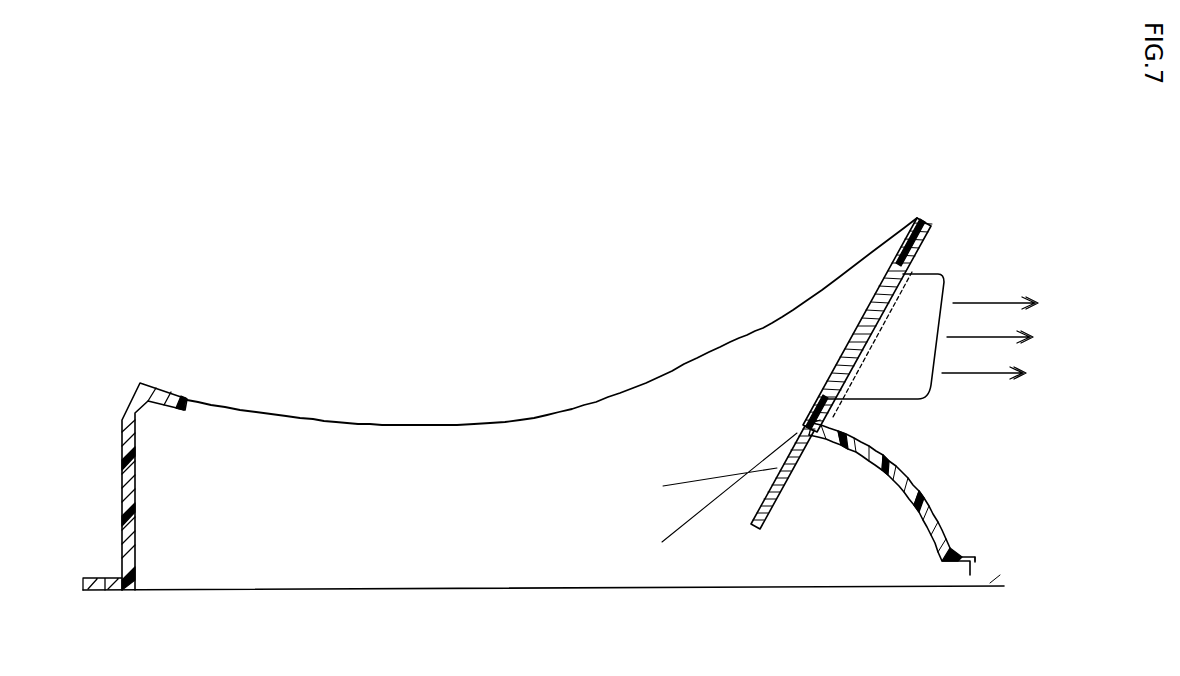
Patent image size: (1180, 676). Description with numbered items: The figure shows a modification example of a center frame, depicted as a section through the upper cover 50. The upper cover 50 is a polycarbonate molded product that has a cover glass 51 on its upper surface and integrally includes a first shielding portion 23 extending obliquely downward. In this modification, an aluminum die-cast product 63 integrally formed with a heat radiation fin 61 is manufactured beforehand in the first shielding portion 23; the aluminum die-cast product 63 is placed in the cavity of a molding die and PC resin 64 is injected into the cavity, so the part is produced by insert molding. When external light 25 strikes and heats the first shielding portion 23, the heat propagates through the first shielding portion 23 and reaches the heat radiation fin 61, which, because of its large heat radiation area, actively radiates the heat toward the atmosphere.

The upper cover 50 is at (403, 322).
The cover glass 51 is at (505, 418).
The heat radiation fin 61 is at (932, 283).
The aluminum die-cast product 63 is at (928, 416).
The PC resin 64 is at (136, 497).
The first shielding portion 23 is at (783, 485).
The external light 25 is at (683, 484).